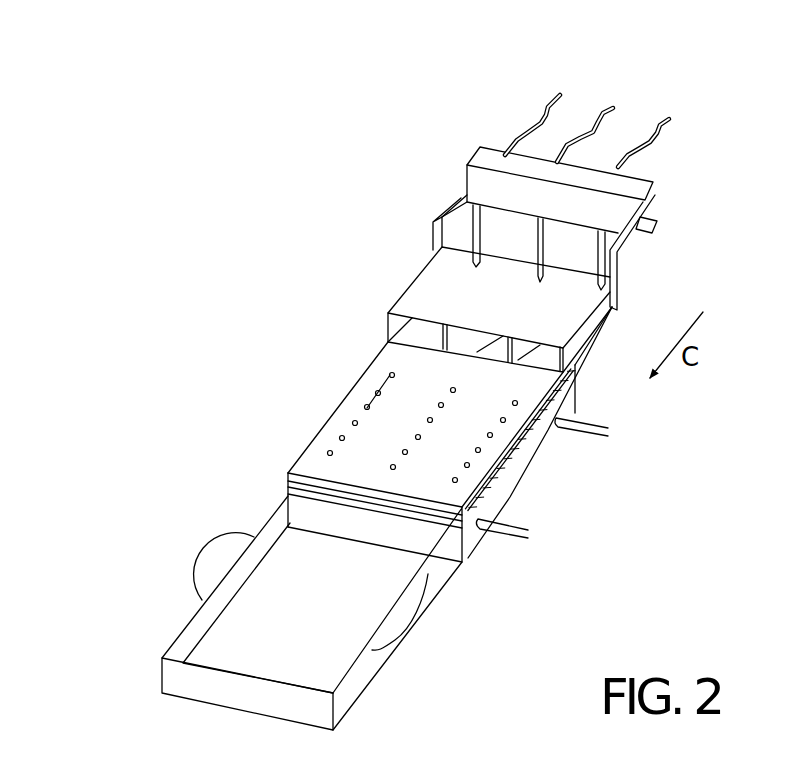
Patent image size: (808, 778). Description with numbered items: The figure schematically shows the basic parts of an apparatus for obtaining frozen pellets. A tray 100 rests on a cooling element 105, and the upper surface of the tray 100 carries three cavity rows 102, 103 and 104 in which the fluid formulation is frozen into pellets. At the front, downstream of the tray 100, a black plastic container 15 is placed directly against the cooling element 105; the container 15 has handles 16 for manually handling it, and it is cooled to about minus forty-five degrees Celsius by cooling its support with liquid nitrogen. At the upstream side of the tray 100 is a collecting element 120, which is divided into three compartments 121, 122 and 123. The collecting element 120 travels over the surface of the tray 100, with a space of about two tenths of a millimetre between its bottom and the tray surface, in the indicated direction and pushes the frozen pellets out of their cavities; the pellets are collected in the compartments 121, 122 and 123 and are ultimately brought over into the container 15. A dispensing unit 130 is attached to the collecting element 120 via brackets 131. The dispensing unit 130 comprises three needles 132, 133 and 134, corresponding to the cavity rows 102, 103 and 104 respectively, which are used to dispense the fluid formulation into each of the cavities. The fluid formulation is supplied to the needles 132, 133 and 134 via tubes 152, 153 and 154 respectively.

The plastic container 15 is at (355, 685).
The handles 16 is at (218, 569).
The tray 100 is at (388, 342).
The cavity row 102 is at (331, 430).
The cavity row 103 is at (418, 412).
The cavity row 104 is at (500, 447).
The cooling element 105 is at (525, 485).
The collecting element 120 is at (412, 280).
The compartment 121 is at (417, 332).
The compartment 122 is at (481, 352).
The compartment 123 is at (547, 368).
The dispensing unit 130 is at (655, 177).
The brackets 131 is at (433, 222).
The needle 132 is at (458, 195).
The needle 133 is at (540, 232).
The needle 134 is at (657, 200).
The tube 152 is at (540, 127).
The tube 153 is at (595, 128).
The tube 154 is at (640, 147).